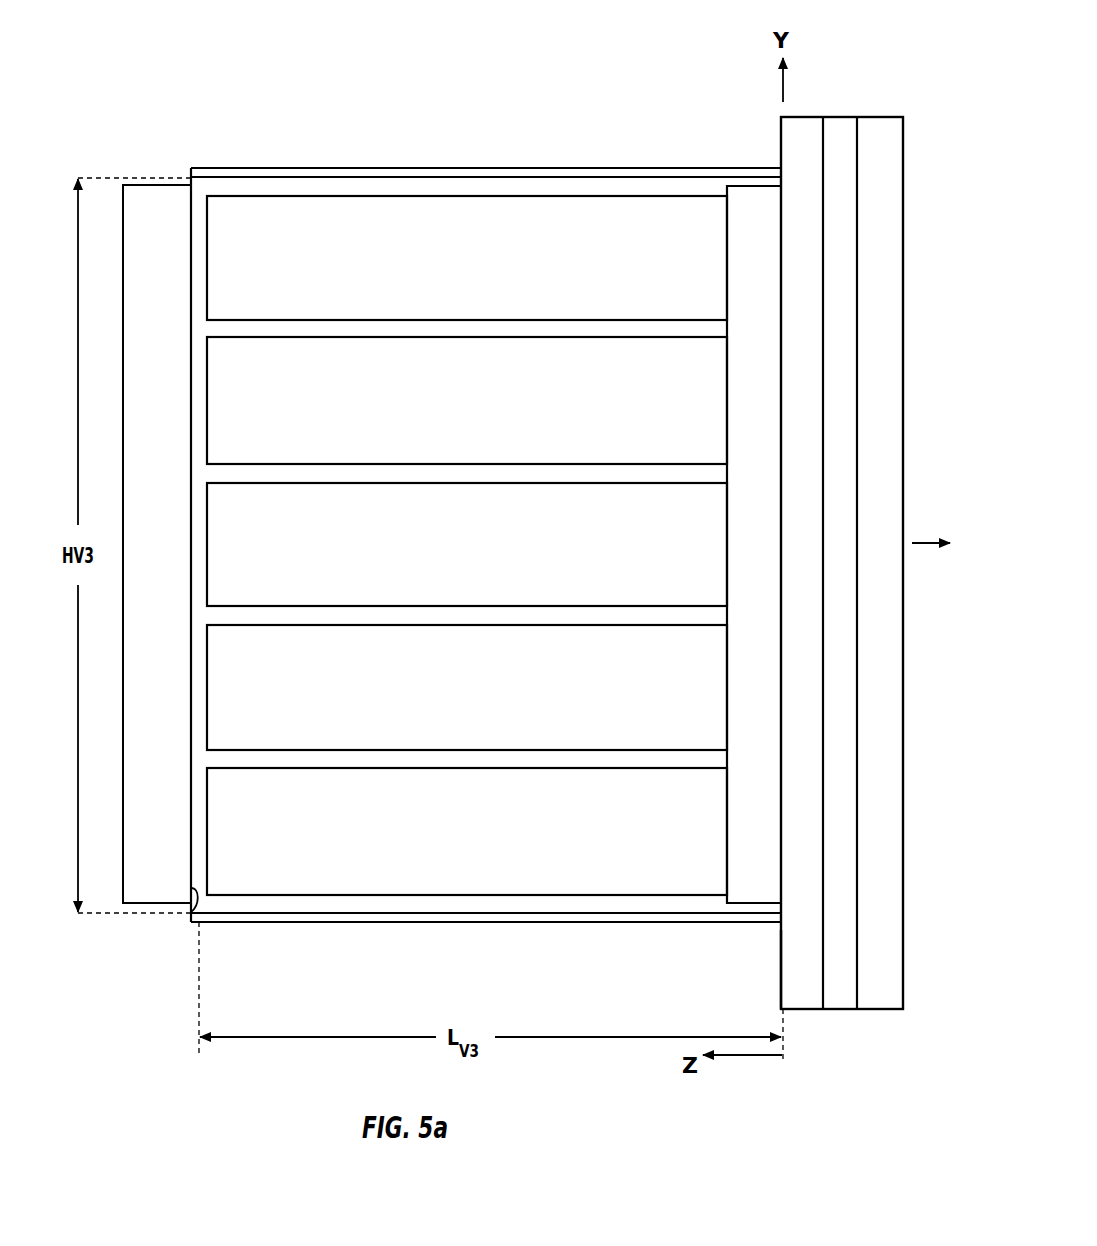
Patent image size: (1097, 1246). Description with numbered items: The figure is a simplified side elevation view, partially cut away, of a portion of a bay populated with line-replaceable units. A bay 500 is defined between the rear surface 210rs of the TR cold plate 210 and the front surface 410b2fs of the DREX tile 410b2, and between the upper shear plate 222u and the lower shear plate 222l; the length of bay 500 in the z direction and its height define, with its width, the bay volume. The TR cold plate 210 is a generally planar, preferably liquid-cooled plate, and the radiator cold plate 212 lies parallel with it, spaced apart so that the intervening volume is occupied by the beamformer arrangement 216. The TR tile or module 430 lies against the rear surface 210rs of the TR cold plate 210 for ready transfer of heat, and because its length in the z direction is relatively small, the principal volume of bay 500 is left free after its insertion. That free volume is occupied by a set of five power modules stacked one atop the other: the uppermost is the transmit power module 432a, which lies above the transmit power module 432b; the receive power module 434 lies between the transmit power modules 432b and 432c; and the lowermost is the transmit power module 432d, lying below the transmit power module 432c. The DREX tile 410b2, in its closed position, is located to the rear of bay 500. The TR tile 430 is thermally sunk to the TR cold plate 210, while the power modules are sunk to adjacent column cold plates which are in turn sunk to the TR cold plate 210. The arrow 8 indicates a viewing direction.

The TR cold plate 210 is at (847, 536).
The rear surface of TR cold plate 210rs is at (797, 1009).
The radiator cold plate 212 is at (873, 130).
The beamformer arrangement 216 is at (841, 135).
The upper shear plate 222u is at (545, 168).
The lower shear plate 222l is at (474, 925).
The DREX tile 410b2 is at (145, 888).
The front surface of DREX tile 410b2fs is at (190, 917).
The TR tile or module 430 is at (743, 885).
The transmit power module 432a is at (383, 262).
The transmit power module 432b is at (383, 404).
The transmit power module 432c is at (383, 692).
The transmit power module 432d is at (383, 835).
The receive power module 434 is at (377, 540).
The bay 500 is at (228, 611).
The viewing direction arrow 8 is at (920, 543).